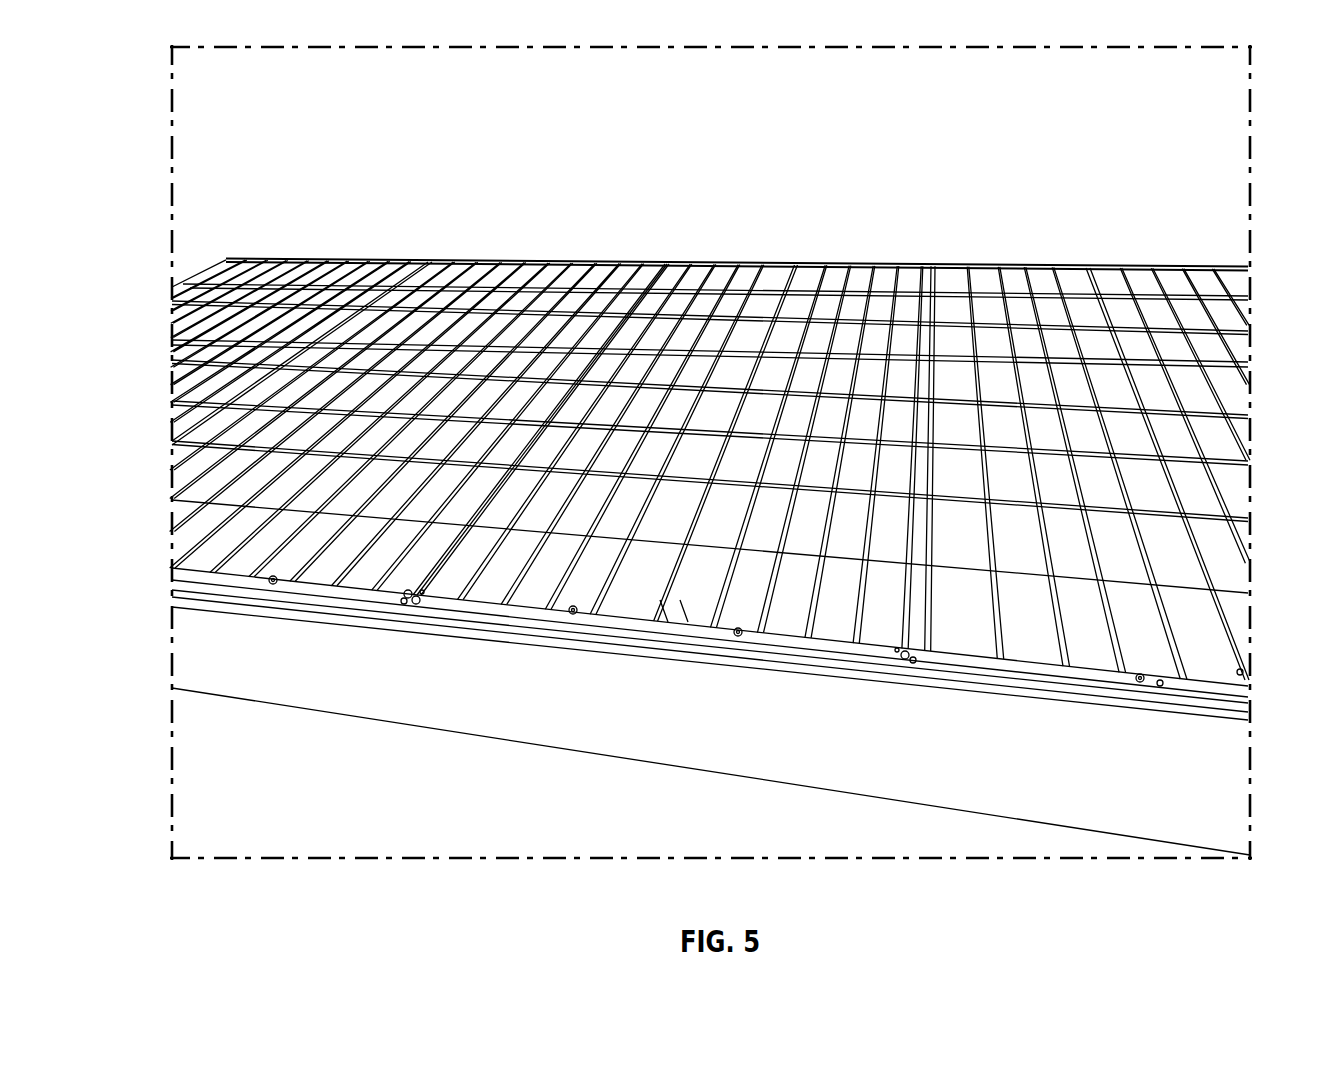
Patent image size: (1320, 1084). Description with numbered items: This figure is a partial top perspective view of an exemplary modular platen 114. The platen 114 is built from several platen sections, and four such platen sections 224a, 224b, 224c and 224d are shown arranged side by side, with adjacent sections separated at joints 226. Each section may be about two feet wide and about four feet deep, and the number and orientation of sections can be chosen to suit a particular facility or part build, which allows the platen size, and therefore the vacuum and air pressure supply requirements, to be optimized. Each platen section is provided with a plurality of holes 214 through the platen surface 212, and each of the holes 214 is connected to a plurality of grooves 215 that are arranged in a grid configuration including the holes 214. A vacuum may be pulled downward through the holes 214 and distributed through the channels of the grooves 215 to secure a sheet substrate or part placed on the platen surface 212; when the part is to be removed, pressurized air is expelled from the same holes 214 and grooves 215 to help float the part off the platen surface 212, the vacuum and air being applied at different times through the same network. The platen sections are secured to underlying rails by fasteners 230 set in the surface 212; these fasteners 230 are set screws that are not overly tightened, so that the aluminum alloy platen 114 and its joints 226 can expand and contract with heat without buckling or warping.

The platen 114 is at (197, 658).
The platen surface 212 is at (190, 514).
The holes 214 is at (675, 335).
The grooves 215 is at (685, 610).
The platen section 224a is at (270, 318).
The platen section 224b is at (490, 326).
The platen section 224c is at (640, 523).
The platen section 224d is at (1087, 373).
The joints 226 is at (250, 448).
The fasteners 230 is at (270, 582).